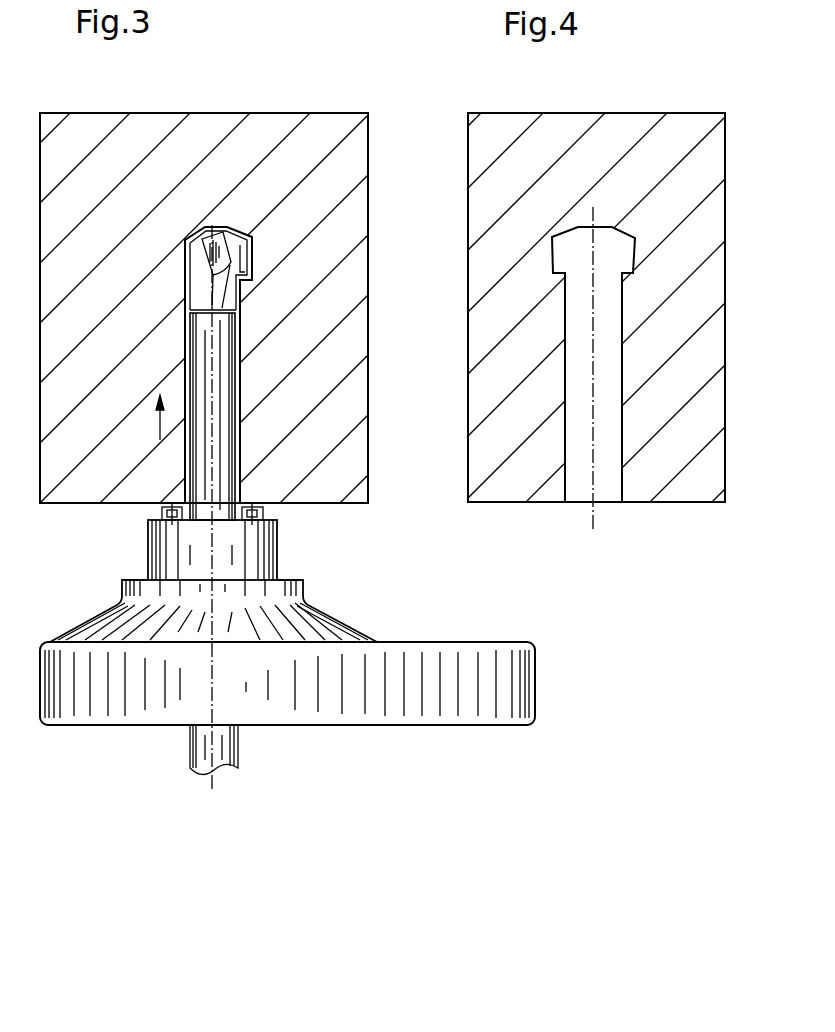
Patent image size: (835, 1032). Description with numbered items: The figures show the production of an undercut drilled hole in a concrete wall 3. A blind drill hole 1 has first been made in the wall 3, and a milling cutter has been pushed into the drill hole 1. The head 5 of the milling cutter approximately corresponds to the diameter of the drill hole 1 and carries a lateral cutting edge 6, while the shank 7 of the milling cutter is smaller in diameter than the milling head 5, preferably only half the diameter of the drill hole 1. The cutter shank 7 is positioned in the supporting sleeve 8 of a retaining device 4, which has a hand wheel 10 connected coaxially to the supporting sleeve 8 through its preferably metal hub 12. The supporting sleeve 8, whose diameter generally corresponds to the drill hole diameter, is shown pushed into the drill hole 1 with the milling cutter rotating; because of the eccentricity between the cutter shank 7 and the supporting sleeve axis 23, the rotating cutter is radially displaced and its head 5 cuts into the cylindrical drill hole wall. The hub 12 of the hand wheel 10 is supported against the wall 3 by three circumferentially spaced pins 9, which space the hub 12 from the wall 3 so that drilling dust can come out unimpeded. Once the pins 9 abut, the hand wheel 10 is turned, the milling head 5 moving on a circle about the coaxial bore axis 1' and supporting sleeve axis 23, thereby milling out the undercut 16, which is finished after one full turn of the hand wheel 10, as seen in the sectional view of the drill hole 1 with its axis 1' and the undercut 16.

In FIG. 3, the drill hole 1 is at (136, 483).
In FIG. 4, the drill hole 1 is at (560, 483).
In FIG. 4, the axis of the drill hole 1' is at (621, 391).
In FIG. 3, the concrete wall 3 is at (65, 490).
In FIG. 4, the concrete wall 3 is at (688, 490).
In FIG. 3, the retaining device 4 is at (317, 600).
In FIG. 3, the head of the milling cutter 5 is at (207, 237).
In FIG. 3, the lateral cutting edge 6 is at (253, 232).
In FIG. 3, the shank of the milling cutter 7 is at (227, 300).
In FIG. 3, the supporting sleeve 8 is at (218, 450).
In FIG. 3, the pins 9 is at (263, 512).
In FIG. 3, the hand wheel 10 is at (403, 663).
In FIG. 3, the hub 12 is at (265, 567).
In FIG. 3, the undercut 16 is at (320, 160).
In FIG. 4, the undercut 16 is at (727, 155).
In FIG. 3, the supporting sleeve axis 23 is at (213, 385).